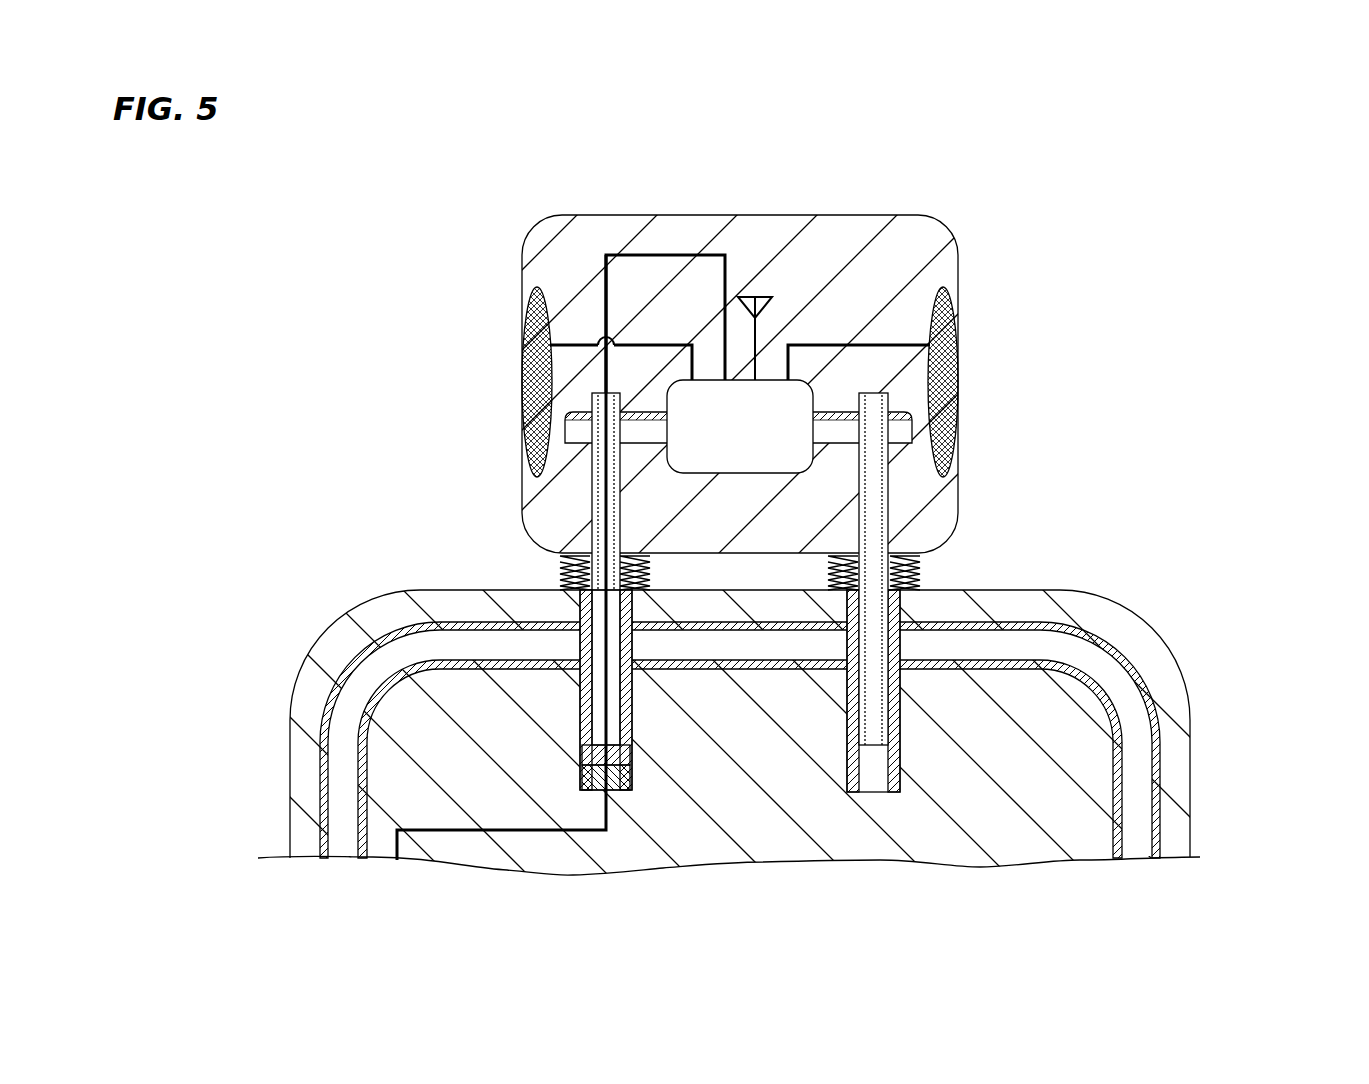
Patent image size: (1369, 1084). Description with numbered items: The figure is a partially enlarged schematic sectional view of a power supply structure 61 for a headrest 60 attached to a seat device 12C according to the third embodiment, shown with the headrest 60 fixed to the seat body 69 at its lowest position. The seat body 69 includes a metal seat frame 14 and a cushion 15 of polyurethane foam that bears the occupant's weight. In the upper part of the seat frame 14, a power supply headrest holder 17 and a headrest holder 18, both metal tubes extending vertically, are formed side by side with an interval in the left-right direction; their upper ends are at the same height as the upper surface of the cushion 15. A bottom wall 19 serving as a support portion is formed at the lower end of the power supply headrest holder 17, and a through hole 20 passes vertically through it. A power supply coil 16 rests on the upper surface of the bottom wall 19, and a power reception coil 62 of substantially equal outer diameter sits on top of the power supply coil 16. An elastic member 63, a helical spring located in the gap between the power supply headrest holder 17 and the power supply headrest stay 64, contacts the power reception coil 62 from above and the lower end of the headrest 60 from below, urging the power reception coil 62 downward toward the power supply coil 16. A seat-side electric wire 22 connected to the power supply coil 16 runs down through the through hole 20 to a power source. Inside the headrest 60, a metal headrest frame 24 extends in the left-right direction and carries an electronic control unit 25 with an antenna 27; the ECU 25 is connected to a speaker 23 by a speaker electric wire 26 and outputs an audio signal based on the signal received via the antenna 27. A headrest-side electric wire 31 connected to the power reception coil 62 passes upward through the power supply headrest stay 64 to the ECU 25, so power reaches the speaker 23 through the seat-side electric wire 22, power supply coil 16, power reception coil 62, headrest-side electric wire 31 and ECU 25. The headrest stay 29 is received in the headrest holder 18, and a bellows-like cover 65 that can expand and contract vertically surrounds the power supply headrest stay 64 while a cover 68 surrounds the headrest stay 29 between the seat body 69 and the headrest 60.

The seat device 12C is at (1240, 415).
The seat frame 14 is at (781, 733).
The cushion 15 is at (1085, 608).
The power supply coil 16 is at (449, 765).
The power supply headrest holder 17 is at (600, 648).
The headrest holder 18 is at (913, 710).
The bottom wall 19 is at (593, 793).
The through hole 20 is at (613, 793).
The seat-side electric wire 22 is at (362, 745).
The speaker 23 is at (523, 372).
The headrest frame 24 is at (935, 412).
The electronic control unit 25 is at (803, 398).
The speaker electric wire 26 is at (598, 343).
The antenna 27 is at (758, 330).
The headrest stay 29 is at (890, 515).
The headrest-side electric wire 31 is at (660, 254).
The headrest 60 is at (942, 260).
The power supply structure 61 is at (430, 582).
The power reception coil 62 is at (590, 690).
The elastic member 63 is at (590, 617).
The power supply headrest stay 64 is at (591, 508).
The cover 65 is at (565, 573).
The cover 68 is at (918, 571).
The seat body 69 is at (782, 699).